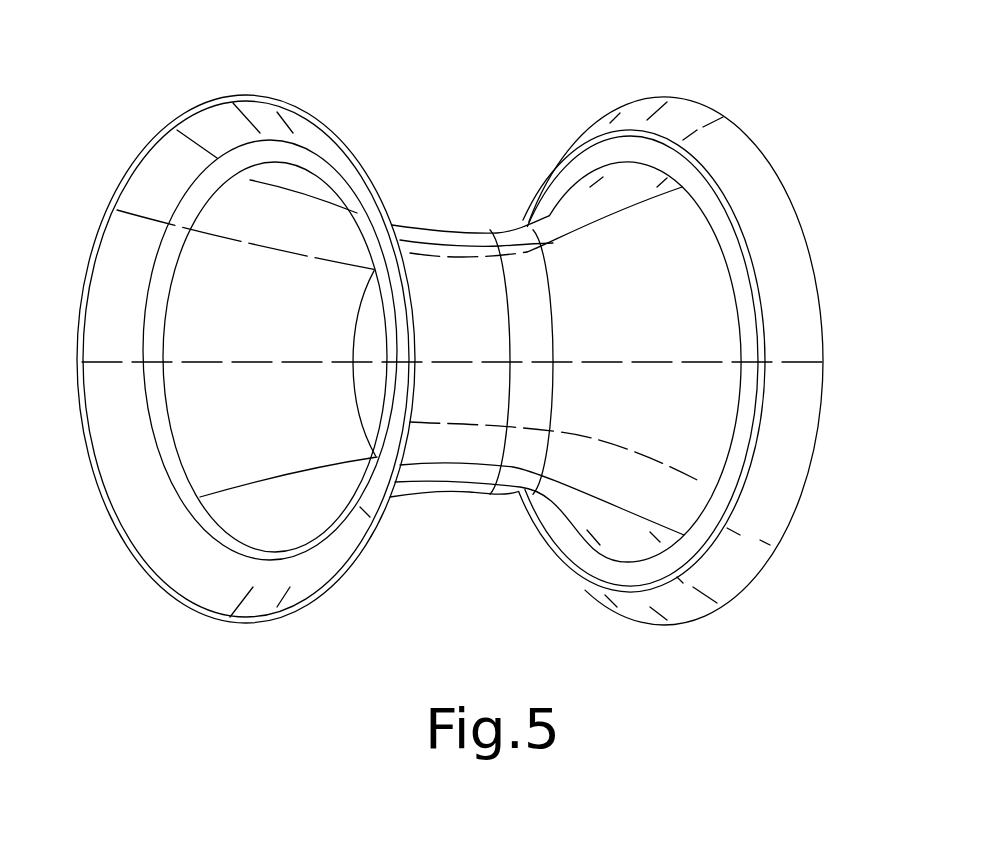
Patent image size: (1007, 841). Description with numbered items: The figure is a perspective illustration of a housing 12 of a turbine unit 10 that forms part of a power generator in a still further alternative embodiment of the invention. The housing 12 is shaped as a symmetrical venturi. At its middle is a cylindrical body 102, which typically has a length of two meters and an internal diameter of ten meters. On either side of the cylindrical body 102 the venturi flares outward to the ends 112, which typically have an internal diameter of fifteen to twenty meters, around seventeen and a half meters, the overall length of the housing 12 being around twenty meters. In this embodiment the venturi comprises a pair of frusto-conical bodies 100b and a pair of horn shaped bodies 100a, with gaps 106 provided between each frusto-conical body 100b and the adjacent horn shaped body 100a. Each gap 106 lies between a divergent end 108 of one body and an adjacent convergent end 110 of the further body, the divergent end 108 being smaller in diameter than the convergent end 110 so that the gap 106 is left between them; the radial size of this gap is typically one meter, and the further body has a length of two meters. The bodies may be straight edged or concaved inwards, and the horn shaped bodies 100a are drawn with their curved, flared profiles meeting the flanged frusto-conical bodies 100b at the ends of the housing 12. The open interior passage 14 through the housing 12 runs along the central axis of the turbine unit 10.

The turbine unit 10 is at (446, 571).
The housing 12 is at (597, 510).
The central passage 14 is at (273, 320).
The horn shaped body 100a is at (405, 225).
The frusto-conical body 100b is at (322, 132).
The cylindrical body 102 is at (470, 228).
The gap 106 is at (693, 540).
The divergent end 108 is at (313, 555).
The convergent end 110 is at (210, 553).
The ends of the symmetrical venturi 112 is at (153, 532).